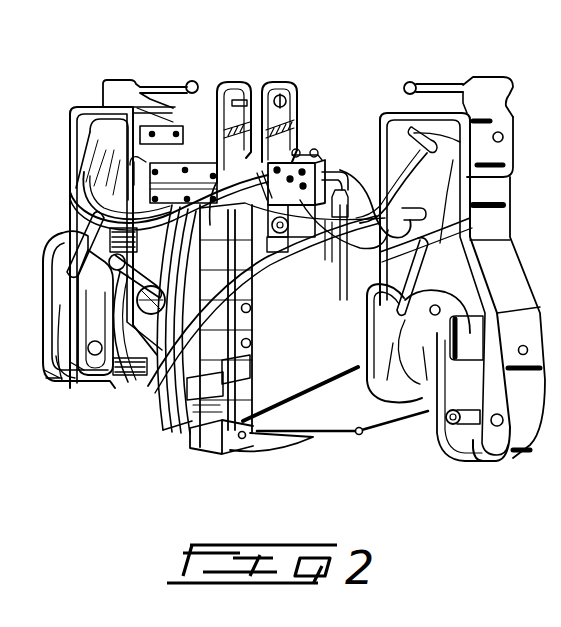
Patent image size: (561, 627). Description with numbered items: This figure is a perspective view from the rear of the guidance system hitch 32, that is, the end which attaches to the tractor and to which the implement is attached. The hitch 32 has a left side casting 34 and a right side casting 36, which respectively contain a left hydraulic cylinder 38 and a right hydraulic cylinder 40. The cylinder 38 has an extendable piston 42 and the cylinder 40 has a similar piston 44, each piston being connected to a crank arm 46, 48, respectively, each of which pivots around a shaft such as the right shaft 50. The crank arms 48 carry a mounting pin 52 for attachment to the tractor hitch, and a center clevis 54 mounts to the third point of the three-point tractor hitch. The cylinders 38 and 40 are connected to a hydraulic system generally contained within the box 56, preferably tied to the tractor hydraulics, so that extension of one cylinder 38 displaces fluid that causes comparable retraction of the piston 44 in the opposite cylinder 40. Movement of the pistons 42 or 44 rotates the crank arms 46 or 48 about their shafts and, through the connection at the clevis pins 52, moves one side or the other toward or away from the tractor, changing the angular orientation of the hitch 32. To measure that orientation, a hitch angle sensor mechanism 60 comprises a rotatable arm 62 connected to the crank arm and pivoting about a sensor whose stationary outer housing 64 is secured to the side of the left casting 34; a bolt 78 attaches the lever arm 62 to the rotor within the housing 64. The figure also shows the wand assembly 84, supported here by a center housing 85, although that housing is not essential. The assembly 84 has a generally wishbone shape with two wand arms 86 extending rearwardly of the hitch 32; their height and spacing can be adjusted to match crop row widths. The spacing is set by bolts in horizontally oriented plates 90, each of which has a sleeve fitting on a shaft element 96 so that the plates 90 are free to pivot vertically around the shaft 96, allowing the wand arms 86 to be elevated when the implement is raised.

The guidance system hitch 32 is at (368, 52).
The left side casting 34 is at (80, 105).
The right side casting 36 is at (512, 113).
The left hydraulic cylinder 38 is at (100, 160).
The right hydraulic cylinder 40 is at (440, 193).
The extendable piston 42 is at (60, 227).
The piston 44 is at (440, 243).
The crank arm 46 is at (55, 305).
The crank arm 48 is at (457, 291).
The right shaft 50 is at (528, 349).
The mounting pin 52 is at (52, 360).
The center clevis 54 is at (258, 67).
The box 56 is at (312, 149).
The hitch angle sensor mechanism 60 is at (110, 382).
The rotatable arm 62 is at (72, 380).
The stationary outer housing 64 is at (256, 301).
The bolt 78 is at (138, 385).
The wand assembly 84 is at (200, 456).
The center housing 85 is at (256, 330).
The wand arms 86 is at (337, 373).
The horizontally oriented plates 90 is at (310, 435).
The shaft element 96 is at (243, 440).